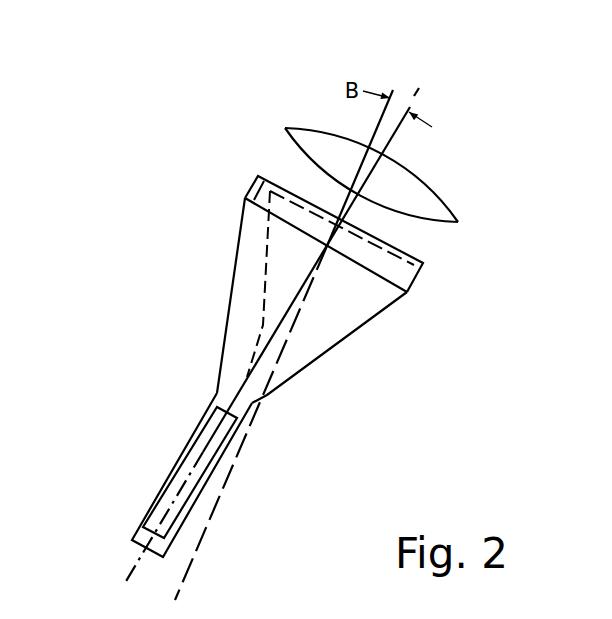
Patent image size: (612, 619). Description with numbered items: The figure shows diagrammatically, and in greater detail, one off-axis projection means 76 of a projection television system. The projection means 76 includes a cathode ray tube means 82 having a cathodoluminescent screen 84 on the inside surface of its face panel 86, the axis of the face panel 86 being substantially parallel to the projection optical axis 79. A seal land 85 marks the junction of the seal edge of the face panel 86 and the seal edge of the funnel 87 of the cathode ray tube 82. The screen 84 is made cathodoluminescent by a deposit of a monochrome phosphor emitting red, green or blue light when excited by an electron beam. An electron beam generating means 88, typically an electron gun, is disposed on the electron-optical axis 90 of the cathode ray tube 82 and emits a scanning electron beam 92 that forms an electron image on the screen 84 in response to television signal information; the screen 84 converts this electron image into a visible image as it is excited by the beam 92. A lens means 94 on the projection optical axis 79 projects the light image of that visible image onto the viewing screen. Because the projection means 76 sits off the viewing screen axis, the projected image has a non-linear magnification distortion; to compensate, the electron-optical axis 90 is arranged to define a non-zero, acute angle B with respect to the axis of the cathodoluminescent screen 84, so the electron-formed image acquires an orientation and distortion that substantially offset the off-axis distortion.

The off-axis projection means 76 is at (165, 150).
The projection optical axis 79 is at (398, 85).
The cathode ray tube means 82 is at (168, 273).
The cathodoluminescent screen 84 is at (245, 198).
The seal land 85 is at (383, 277).
The face panel 86 is at (424, 264).
The funnel 87 is at (346, 338).
The electron beam generating means 88 is at (175, 477).
The electron-optical axis 90 is at (133, 567).
The scanning electron beam 92 is at (262, 327).
The lens means 94 is at (310, 132).